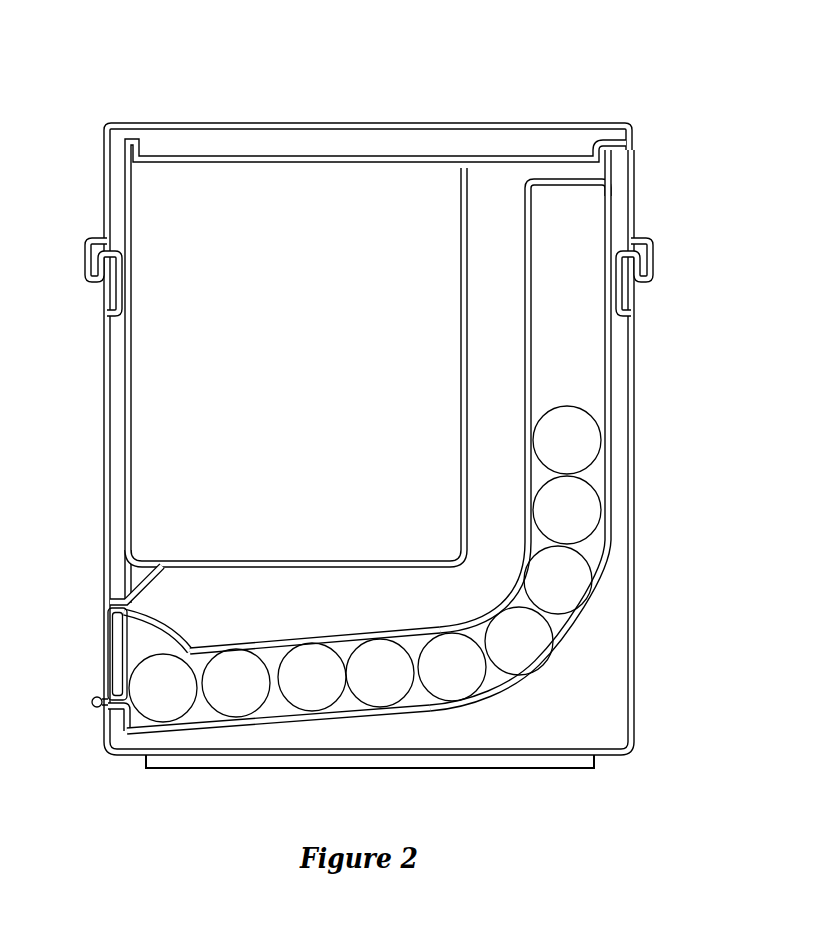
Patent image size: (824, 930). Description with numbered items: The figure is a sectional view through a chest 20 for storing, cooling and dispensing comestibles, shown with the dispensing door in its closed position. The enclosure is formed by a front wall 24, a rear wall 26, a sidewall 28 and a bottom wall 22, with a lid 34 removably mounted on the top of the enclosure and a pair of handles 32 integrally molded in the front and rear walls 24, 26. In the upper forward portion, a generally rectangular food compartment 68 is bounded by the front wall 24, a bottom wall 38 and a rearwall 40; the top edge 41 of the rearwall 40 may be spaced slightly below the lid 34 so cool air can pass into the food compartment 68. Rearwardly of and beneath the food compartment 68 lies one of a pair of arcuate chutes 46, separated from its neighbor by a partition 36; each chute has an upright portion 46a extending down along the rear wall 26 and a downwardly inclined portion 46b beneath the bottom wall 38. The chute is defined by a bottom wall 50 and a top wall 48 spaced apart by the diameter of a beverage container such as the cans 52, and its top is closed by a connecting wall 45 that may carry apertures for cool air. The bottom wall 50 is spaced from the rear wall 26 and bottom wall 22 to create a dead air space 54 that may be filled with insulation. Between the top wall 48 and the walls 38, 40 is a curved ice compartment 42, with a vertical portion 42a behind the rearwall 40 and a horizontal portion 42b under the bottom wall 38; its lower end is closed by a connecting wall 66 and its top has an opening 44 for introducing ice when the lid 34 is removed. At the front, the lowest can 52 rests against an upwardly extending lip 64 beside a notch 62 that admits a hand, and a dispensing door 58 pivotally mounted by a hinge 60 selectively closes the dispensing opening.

The chest 20 is at (418, 443).
The bottom wall 22 is at (443, 757).
The front wall 24 is at (104, 430).
The rear wall 26 is at (632, 527).
The sidewall 28 is at (214, 282).
The handles 32 is at (88, 244).
The lid 34 is at (331, 122).
The partition 36 is at (428, 449).
The bottom wall 38 is at (275, 556).
The rearwall 40 is at (464, 373).
The top edge 41 is at (464, 168).
The ice compartment 42 is at (493, 273).
The vertical portion 42a is at (490, 403).
The horizontal portion 42b is at (339, 602).
The opening 44 is at (508, 214).
The connecting wall 45 is at (562, 178).
The chutes 46 is at (565, 622).
The upright portion 46a is at (572, 228).
The inclined portion 46b is at (345, 703).
The top wall 48 is at (528, 321).
The bottom wall 50 is at (611, 478).
The cans 52 is at (144, 702).
The dead air space 54 is at (580, 709).
The dispensing door 58 is at (105, 651).
The hinge 60 is at (95, 702).
The notch 62 is at (147, 642).
The lip 64 is at (145, 732).
The connecting wall 66 is at (152, 583).
The food compartment 68 is at (272, 207).